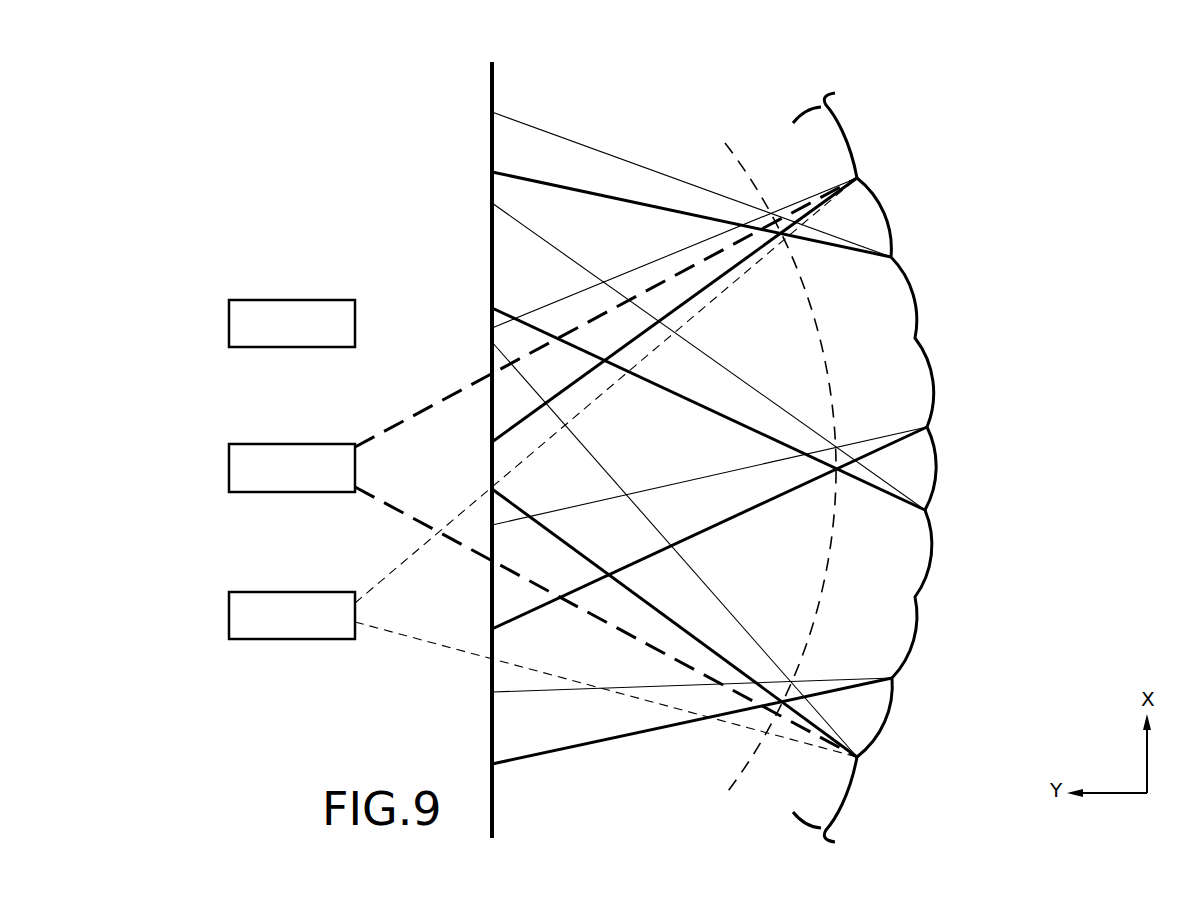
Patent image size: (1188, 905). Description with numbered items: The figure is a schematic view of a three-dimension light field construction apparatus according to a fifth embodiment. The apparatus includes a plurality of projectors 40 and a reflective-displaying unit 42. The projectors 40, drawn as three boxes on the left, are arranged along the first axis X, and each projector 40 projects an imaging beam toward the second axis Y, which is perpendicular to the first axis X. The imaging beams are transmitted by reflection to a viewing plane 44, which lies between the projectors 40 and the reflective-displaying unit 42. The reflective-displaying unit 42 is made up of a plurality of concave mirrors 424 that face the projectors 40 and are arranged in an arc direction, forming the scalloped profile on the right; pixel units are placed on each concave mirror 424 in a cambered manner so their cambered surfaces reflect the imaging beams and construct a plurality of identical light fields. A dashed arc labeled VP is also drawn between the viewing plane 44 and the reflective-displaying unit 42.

The projector 40 is at (247, 323).
The viewing plane 44 is at (492, 92).
The reflective-displaying unit 42 is at (927, 467).
The concave mirror 424 is at (937, 453).
The viewing plane VP is at (742, 163).